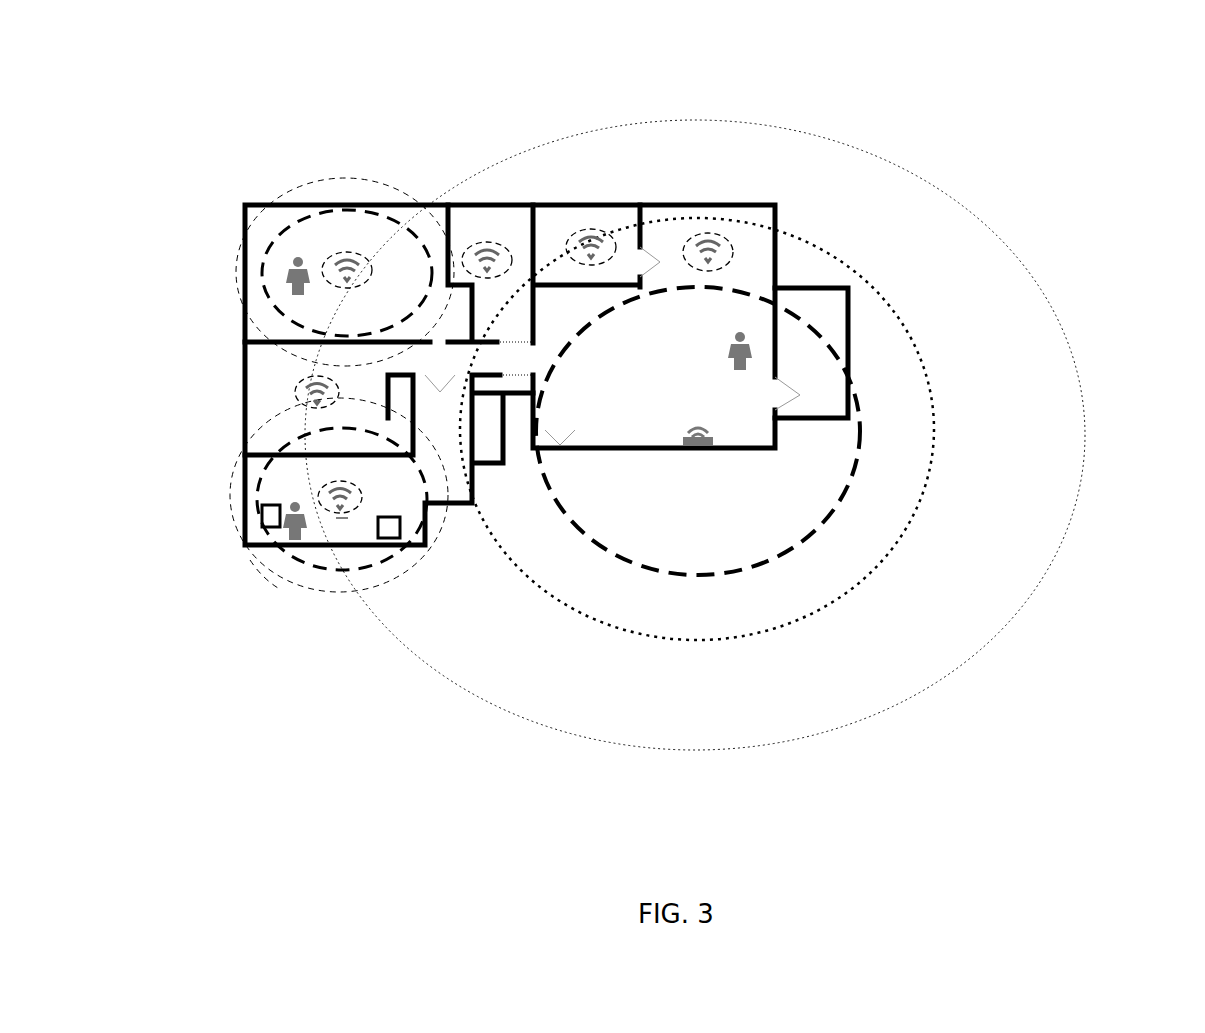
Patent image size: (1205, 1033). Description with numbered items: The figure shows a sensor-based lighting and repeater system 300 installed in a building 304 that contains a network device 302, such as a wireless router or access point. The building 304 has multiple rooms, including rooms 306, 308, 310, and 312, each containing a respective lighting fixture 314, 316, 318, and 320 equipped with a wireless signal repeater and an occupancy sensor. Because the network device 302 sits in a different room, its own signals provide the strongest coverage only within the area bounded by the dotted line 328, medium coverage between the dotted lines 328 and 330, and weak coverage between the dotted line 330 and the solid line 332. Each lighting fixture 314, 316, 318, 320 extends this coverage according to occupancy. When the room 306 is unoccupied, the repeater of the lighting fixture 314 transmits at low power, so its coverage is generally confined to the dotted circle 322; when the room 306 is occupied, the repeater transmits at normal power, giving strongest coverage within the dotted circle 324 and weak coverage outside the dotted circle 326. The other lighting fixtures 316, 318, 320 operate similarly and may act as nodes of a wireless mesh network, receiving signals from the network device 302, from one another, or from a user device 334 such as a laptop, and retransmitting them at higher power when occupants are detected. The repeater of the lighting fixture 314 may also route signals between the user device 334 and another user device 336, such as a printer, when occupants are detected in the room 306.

The sensor-based lighting and repeater system 300 is at (982, 82).
The network device 302 is at (708, 440).
The building 304 is at (747, 202).
The room 306 is at (318, 470).
The room 308 is at (272, 360).
The room 310 is at (278, 222).
The room 312 is at (556, 222).
The lighting fixture 314 is at (333, 497).
The lighting fixture 316 is at (312, 392).
The lighting fixture 318 is at (346, 268).
The lighting fixture 320 is at (592, 248).
The dotted circle 322 is at (342, 520).
The dotted circle 324 is at (300, 577).
The dotted circle 326 is at (255, 563).
The dotted line 328 is at (857, 468).
The dotted line 330 is at (913, 527).
The solid line 332 is at (985, 643).
The user device 334 is at (263, 518).
The user device 336 is at (393, 535).